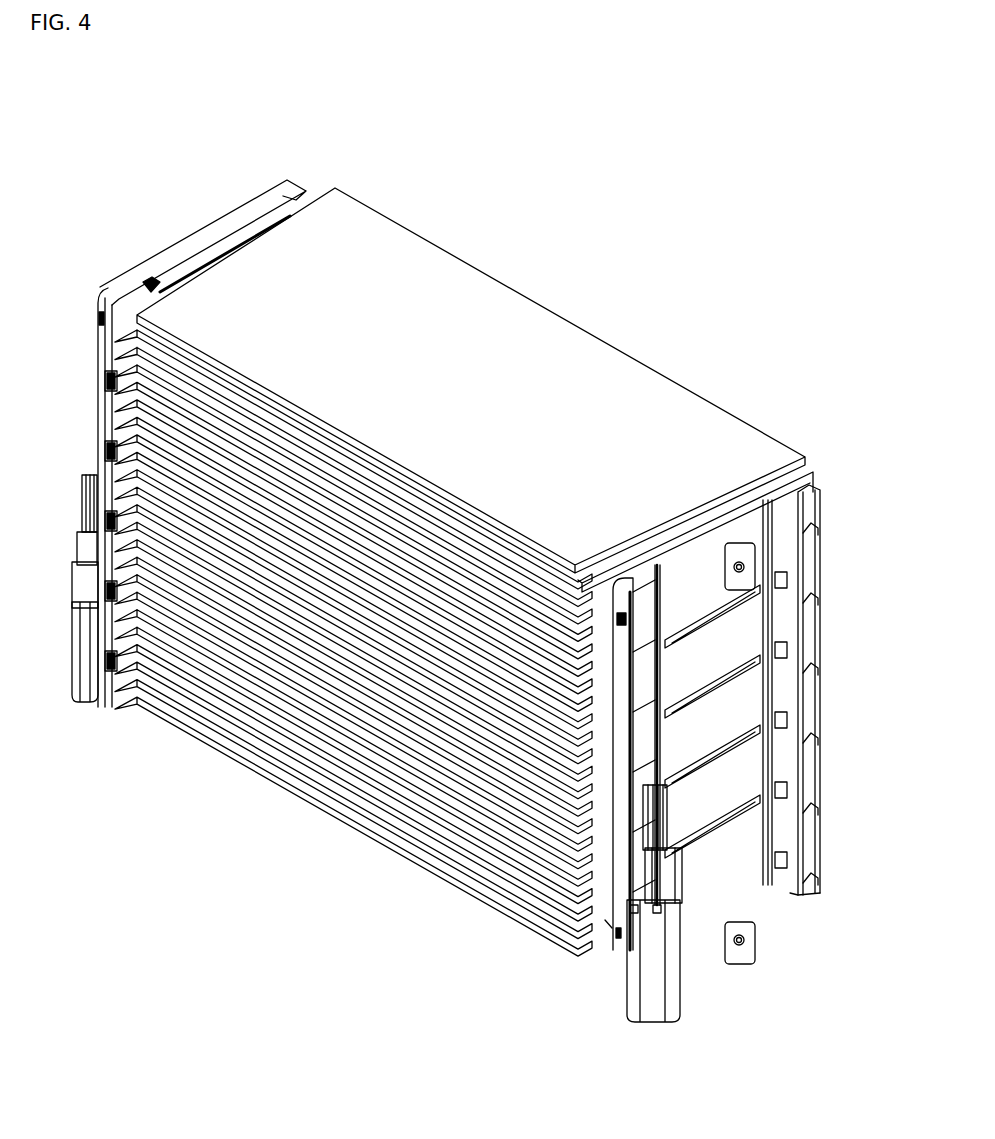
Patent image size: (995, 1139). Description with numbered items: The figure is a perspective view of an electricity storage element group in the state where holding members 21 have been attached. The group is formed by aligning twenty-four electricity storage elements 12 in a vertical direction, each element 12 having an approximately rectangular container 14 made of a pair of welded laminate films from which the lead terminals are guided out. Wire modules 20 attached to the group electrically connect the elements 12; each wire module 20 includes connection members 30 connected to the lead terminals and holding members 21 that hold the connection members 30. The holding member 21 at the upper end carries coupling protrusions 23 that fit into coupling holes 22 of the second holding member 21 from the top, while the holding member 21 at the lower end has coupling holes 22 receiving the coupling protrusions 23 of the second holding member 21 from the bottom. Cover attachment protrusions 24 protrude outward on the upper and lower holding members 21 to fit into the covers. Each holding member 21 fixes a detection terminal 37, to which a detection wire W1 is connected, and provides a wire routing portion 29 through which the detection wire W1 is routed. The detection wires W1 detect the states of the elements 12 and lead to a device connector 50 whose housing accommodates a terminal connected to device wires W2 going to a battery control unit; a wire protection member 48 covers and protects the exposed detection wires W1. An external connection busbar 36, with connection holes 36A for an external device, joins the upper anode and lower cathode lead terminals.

The electricity storage element 12 is at (573, 345).
The container 14 is at (729, 440).
The wire module 20 is at (822, 498).
The holding member 21 is at (98, 338).
The coupling hole 22 is at (106, 384).
The coupling protrusion 23 is at (106, 372).
The cover attachment protrusion 24 is at (100, 318).
The wire routing portion 29 is at (805, 885).
The connection member 30 is at (785, 630).
The external connection busbar 36 is at (739, 754).
The connection hole 36A is at (775, 550).
The detection terminal 37 is at (790, 580).
The wire protection member 48 is at (666, 990).
The device connector 50 is at (72, 590).
The detection wire W1 is at (125, 650).
The device wire W2 is at (88, 480).